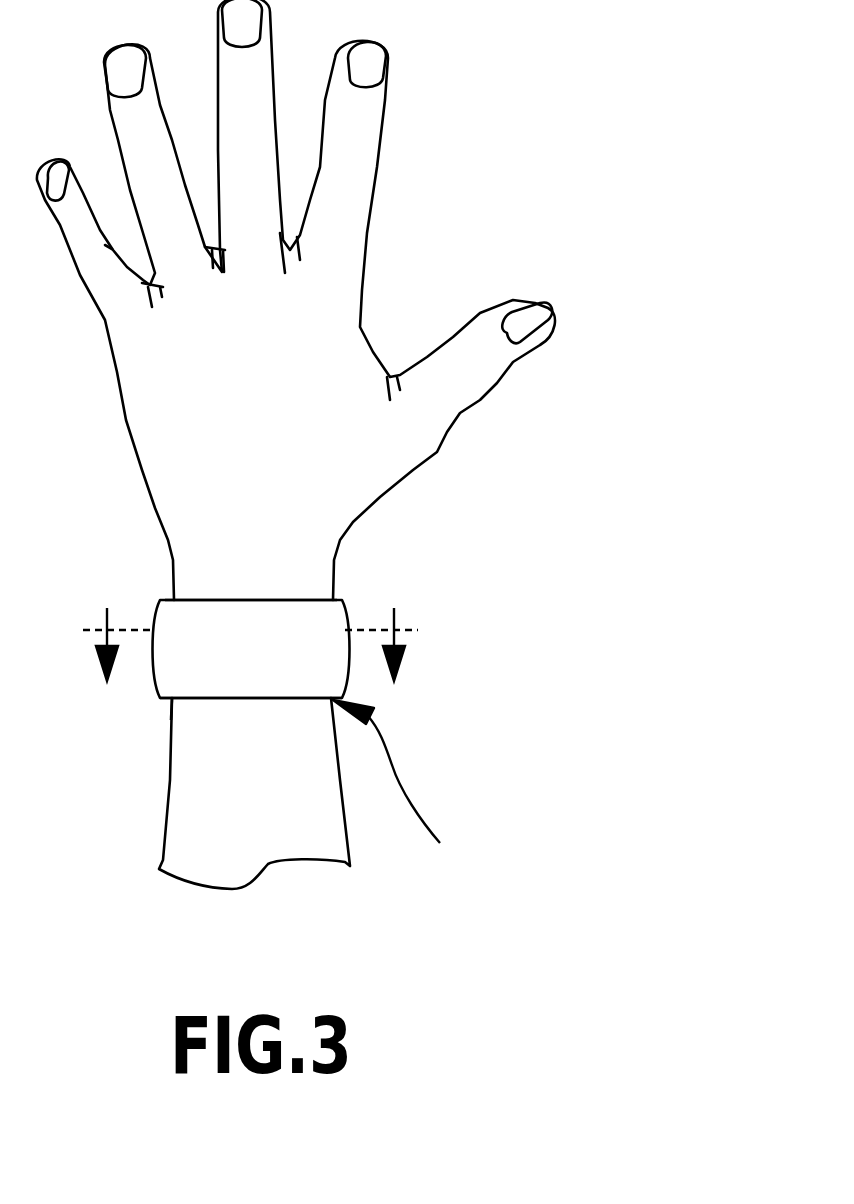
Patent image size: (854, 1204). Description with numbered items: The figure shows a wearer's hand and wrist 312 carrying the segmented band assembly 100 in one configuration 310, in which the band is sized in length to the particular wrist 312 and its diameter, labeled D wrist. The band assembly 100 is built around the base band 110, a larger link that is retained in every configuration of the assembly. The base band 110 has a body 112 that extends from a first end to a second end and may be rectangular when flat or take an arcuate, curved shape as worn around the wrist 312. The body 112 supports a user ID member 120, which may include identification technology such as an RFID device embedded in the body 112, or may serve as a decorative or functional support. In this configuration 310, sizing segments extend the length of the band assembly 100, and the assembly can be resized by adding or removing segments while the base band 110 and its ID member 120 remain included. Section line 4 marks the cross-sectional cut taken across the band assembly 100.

The configuration 310 is at (583, 255).
The wrist 312 is at (306, 849).
The band assembly 100 is at (560, 616).
The user ID member 120 is at (256, 537).
The body 112 is at (218, 680).
The base band 110 is at (211, 750).
The section line 4- 4 is at (250, 643).